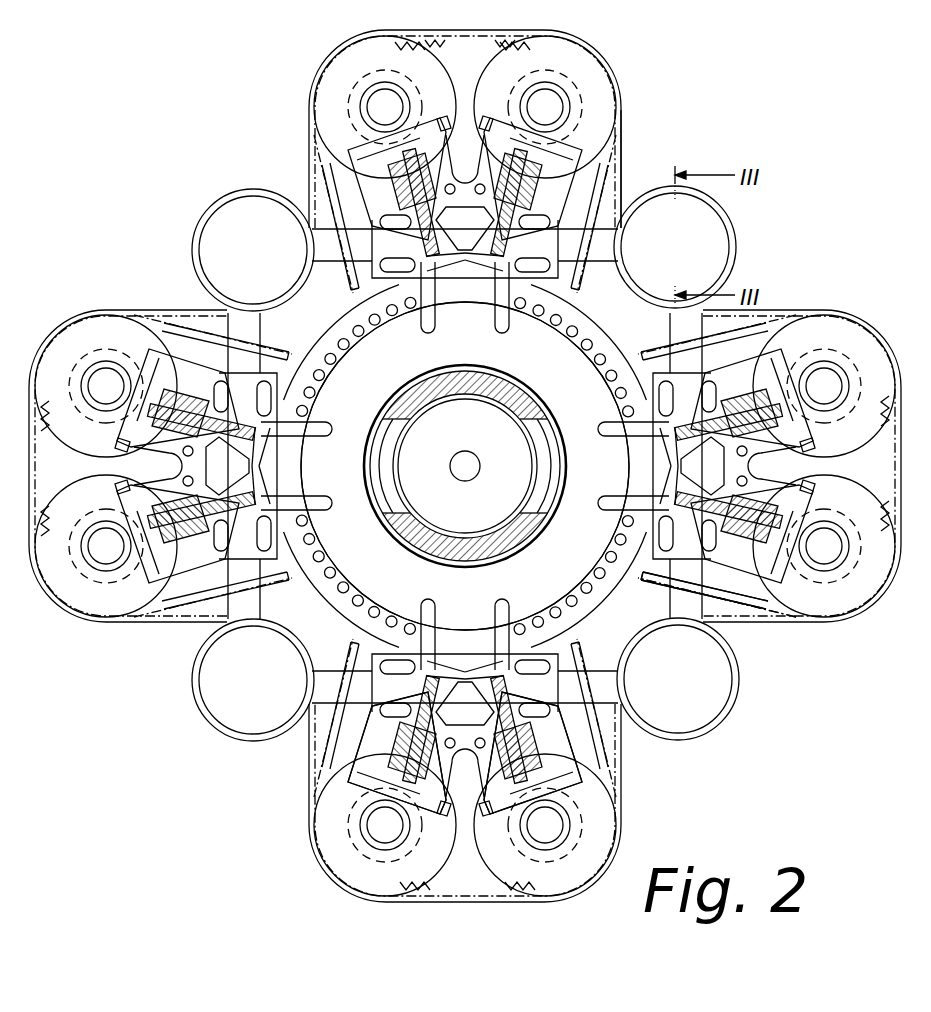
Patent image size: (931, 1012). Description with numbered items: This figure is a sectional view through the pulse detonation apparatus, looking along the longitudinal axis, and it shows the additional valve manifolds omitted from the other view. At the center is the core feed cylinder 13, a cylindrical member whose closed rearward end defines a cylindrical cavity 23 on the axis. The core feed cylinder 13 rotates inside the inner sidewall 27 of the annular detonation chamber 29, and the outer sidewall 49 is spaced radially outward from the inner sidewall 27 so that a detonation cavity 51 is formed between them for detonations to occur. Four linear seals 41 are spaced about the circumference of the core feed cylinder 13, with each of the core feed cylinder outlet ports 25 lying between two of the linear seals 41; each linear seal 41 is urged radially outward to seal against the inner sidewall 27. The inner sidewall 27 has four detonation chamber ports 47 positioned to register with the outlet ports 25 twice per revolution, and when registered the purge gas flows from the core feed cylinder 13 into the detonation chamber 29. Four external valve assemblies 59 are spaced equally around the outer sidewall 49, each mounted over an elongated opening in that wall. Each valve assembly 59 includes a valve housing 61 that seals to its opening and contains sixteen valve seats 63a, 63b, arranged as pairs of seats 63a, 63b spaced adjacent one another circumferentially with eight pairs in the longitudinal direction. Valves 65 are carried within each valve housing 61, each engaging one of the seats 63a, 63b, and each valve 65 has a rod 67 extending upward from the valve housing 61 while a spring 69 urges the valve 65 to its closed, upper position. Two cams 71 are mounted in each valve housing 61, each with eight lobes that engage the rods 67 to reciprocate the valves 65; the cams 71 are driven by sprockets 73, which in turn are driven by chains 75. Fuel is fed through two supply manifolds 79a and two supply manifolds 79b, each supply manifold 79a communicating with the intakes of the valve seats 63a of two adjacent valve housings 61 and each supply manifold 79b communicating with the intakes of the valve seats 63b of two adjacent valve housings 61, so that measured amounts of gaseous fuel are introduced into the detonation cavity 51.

The core feed cylinder 13 is at (517, 405).
The cylindrical cavity 23 is at (444, 475).
The core feed cylinder outlet ports 25 is at (523, 525).
The inner sidewall 27 is at (533, 544).
The annular detonation chamber 29 is at (600, 345).
The linear seals 41 is at (398, 543).
The detonation chamber ports 47 is at (538, 437).
The outer sidewall 49 is at (323, 341).
The detonation cavity 51 is at (372, 401).
The external valve assembly 59 is at (797, 341).
The valve housing 61 is at (725, 598).
The valve seats 63a is at (428, 314).
The valve seats 63b is at (500, 314).
The valves 65 is at (352, 745).
The rod 67 is at (372, 798).
The spring 69 is at (590, 763).
The cams 71 is at (520, 82).
The sprockets 73 is at (553, 34).
The chains 75 is at (608, 168).
The supply manifolds 79a is at (231, 195).
The supply manifolds 79b is at (736, 244).